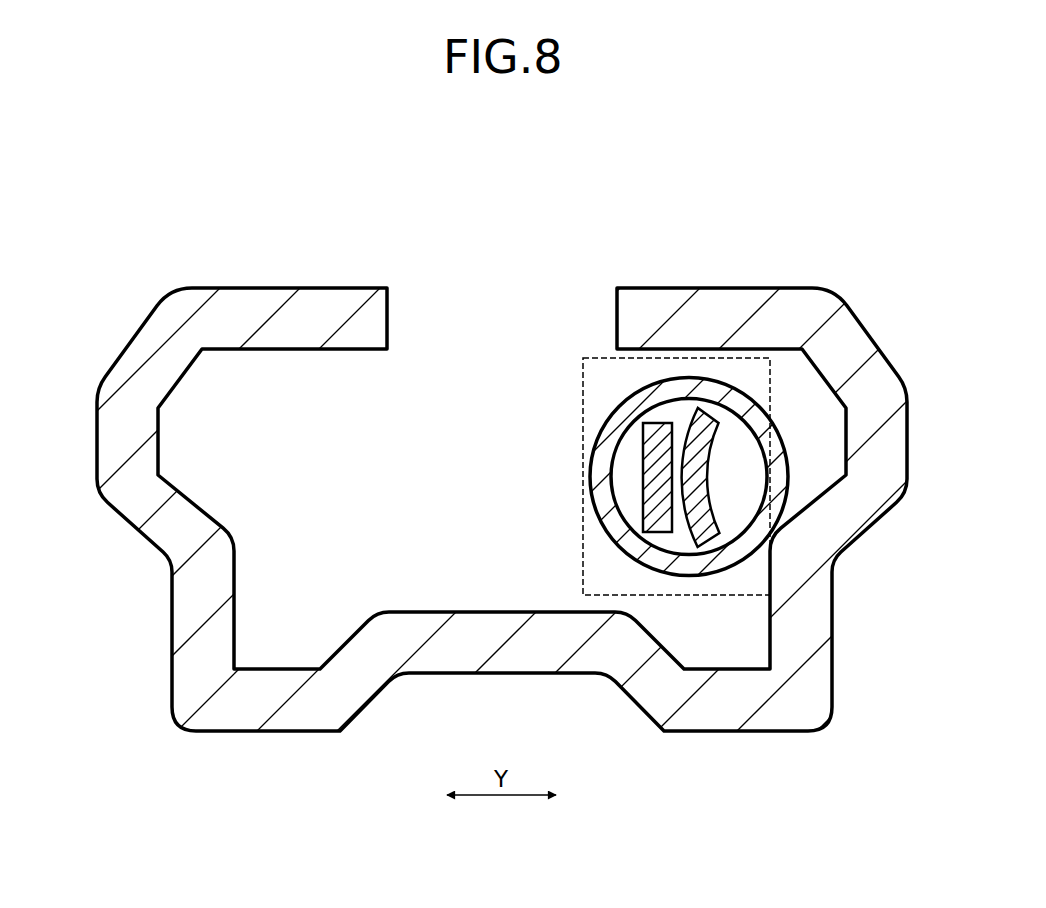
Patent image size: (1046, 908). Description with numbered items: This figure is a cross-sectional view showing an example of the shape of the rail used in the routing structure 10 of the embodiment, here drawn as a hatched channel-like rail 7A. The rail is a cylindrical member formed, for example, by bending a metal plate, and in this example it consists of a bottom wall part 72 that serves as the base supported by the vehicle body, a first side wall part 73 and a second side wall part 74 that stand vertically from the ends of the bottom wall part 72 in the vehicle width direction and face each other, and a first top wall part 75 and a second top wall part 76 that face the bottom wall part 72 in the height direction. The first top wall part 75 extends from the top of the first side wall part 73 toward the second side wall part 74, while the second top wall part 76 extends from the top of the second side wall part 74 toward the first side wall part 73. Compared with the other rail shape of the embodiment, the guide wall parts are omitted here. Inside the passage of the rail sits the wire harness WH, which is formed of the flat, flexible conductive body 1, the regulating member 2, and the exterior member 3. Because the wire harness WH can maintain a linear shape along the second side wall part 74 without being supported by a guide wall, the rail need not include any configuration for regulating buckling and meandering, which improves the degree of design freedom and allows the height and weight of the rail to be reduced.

The conductive body 1 is at (661, 430).
The regulating member 2 is at (705, 400).
The exterior member 3 is at (702, 416).
The protector body 7A is at (366, 243).
The routing structure 10 is at (489, 222).
The bottom wall part 72 is at (503, 673).
The first side wall part 73 is at (96, 441).
The second side wall part 74 is at (908, 441).
The first top wall part 75 is at (297, 288).
The second top wall part 76 is at (655, 288).
The wire harness WH is at (783, 412).